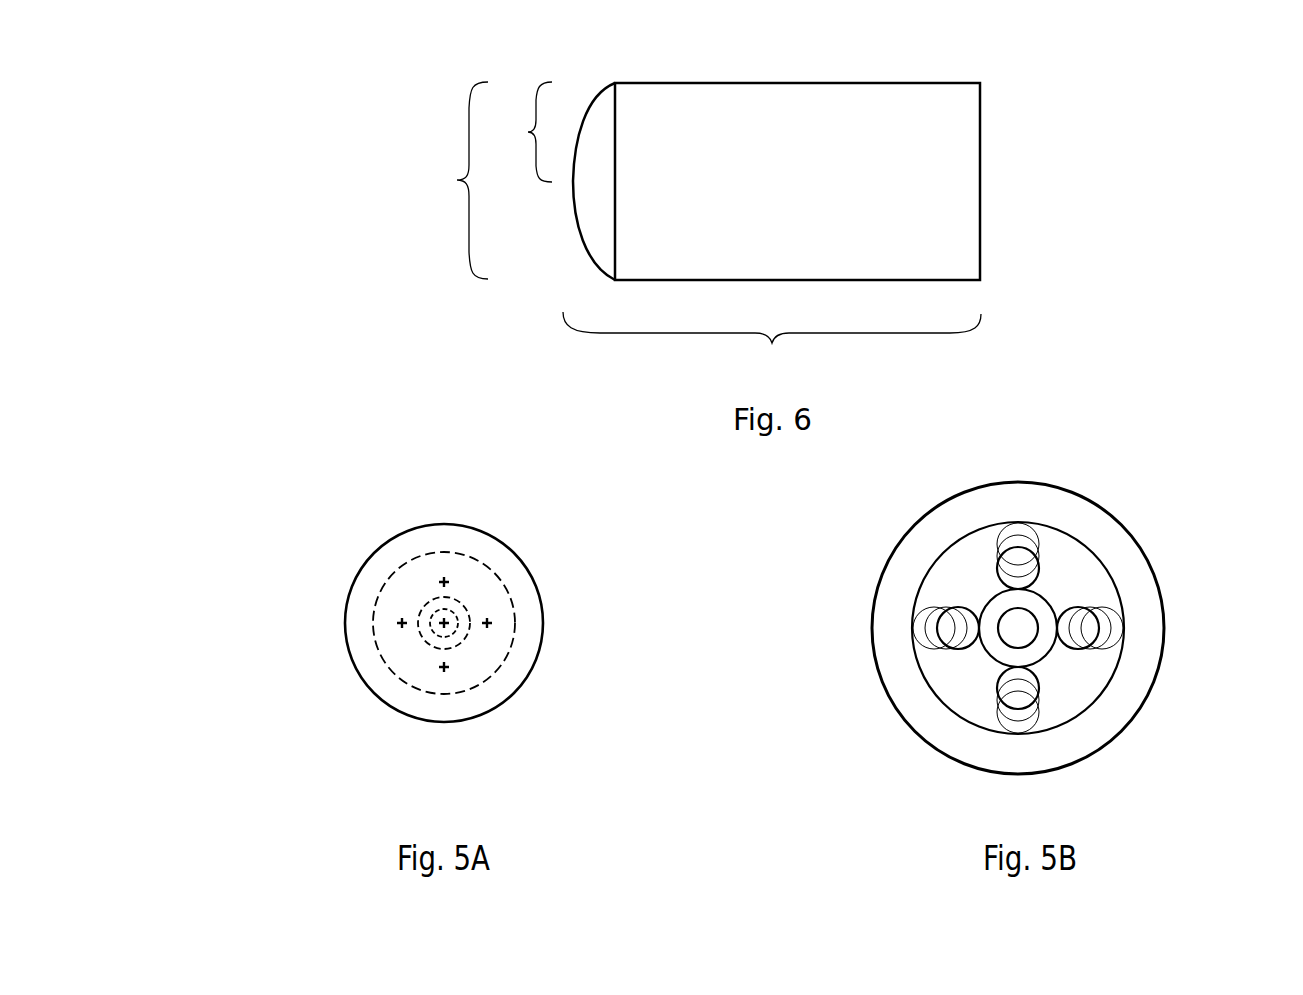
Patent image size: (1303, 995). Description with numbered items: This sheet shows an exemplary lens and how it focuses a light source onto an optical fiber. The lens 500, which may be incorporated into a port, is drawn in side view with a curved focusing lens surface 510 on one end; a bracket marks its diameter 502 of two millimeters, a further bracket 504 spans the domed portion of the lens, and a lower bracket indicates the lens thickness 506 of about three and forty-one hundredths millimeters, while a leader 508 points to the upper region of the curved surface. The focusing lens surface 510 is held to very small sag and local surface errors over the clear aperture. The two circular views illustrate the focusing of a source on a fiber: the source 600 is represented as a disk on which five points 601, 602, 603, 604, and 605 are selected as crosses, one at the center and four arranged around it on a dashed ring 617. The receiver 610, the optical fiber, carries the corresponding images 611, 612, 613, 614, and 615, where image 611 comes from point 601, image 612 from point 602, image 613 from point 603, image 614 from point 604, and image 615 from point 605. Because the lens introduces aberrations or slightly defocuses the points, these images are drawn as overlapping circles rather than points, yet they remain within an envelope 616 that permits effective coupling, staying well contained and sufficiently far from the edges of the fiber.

In FIG. 6, the lens 500 is at (1020, 134).
In FIG. 6, the diameter 502 is at (457, 180).
In FIG. 6, the curved tip portion 504 is at (528, 132).
In FIG. 6, the lens thickness 506 is at (772, 346).
In FIG. 6, the upper curved surface 508 is at (576, 166).
In FIG. 6, the focusing lens surface 510 is at (573, 183).
In FIG. 5A, the source 600 is at (555, 539).
In FIG. 5A, the point 601 is at (448, 578).
In FIG. 5A, the point 602 is at (402, 626).
In FIG. 5A, the point 603 is at (448, 671).
In FIG. 5A, the point 604 is at (450, 627).
In FIG. 5A, the point 605 is at (489, 623).
In FIG. 5A, the fiber ring circle 617 is at (427, 552).
In FIG. 5B, the receiver 610 is at (1186, 497).
In FIG. 5B, the image 611 is at (1022, 558).
In FIG. 5B, the image 612 is at (950, 637).
In FIG. 5B, the image 613 is at (1022, 698).
In FIG. 5B, the image 614 is at (1018, 632).
In FIG. 5B, the image 615 is at (1083, 625).
In FIG. 5B, the envelope 616 is at (958, 560).